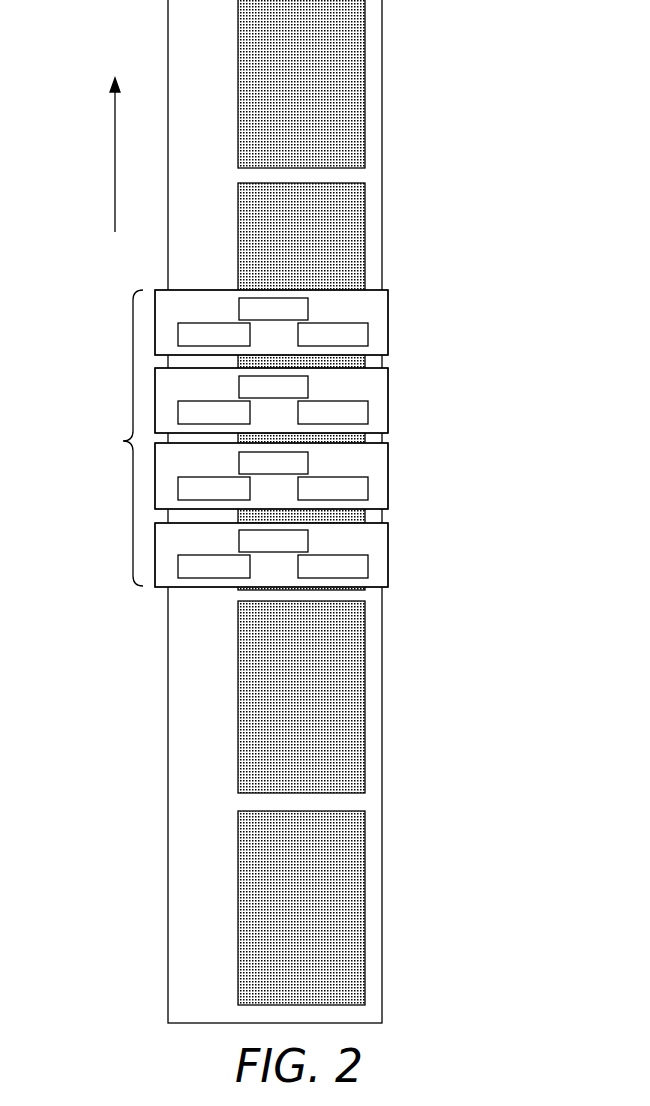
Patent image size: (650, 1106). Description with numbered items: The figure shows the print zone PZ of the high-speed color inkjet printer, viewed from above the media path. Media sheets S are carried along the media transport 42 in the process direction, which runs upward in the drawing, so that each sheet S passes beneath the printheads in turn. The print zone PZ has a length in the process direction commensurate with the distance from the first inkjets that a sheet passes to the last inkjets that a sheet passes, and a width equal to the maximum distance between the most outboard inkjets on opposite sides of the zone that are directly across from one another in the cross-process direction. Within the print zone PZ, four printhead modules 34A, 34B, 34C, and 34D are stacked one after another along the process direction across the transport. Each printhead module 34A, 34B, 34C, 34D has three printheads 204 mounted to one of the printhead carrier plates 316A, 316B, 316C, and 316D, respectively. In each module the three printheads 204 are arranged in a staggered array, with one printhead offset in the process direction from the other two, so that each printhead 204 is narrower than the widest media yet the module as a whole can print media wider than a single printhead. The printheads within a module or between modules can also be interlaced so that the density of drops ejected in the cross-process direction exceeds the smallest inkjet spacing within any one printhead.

The sheets S is at (365, 82).
The media transport 42 is at (154, 192).
The print zone PZ is at (119, 438).
The printhead carrier plate 316A is at (388, 538).
The printhead carrier plate 316B is at (388, 458).
The printhead carrier plate 316C is at (388, 383).
The printhead carrier plate 316D is at (388, 305).
The printhead module 34A is at (398, 562).
The printhead module 34B is at (398, 483).
The printhead module 34C is at (398, 400).
The printhead module 34D is at (398, 322).
The printheads 204 is at (273, 438).